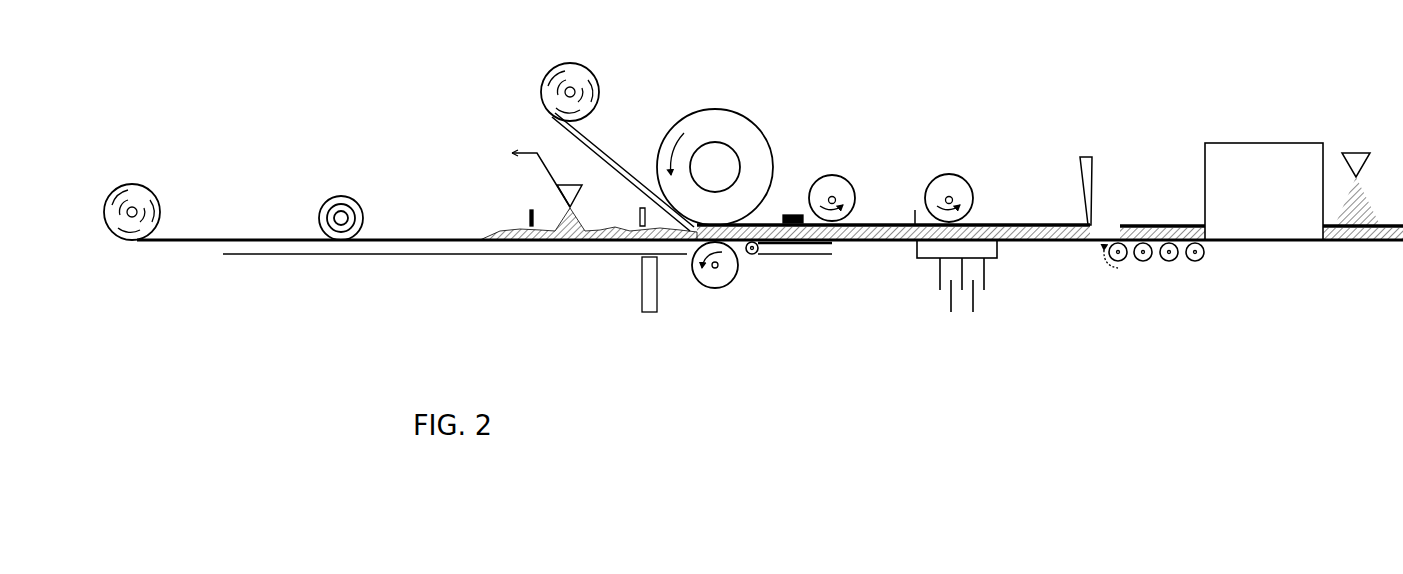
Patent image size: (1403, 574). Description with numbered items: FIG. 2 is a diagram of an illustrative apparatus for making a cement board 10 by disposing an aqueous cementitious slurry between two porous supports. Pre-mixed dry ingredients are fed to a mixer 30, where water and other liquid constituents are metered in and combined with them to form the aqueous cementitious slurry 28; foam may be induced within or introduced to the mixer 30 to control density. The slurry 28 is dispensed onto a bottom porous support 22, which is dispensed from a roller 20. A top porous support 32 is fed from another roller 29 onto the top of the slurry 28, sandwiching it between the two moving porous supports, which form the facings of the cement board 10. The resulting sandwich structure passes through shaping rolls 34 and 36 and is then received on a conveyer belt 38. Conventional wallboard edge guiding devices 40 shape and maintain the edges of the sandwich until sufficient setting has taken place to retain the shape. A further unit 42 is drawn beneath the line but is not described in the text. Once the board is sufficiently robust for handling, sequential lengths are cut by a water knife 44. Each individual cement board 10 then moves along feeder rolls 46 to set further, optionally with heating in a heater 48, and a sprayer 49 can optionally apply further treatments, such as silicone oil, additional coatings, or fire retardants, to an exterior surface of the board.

The cement board 10 is at (1157, 225).
The roller 20 is at (133, 183).
The bottom porous support 22 is at (190, 242).
The aqueous cementitious slurry 28 is at (522, 228).
The roller 29 is at (597, 78).
The mixer 30 is at (535, 150).
The porous support 32 is at (593, 141).
The shaping roll 34 is at (743, 123).
The shaping roll 36 is at (718, 290).
The conveyer belt 38 is at (783, 257).
The wallboard edge guiding devices 40 is at (785, 213).
The vacuum box 42 is at (987, 250).
The water knife 44 is at (1087, 157).
The feeder rolls 46 is at (1153, 268).
The heater 48 is at (1270, 207).
The sprayer 49 is at (1353, 153).